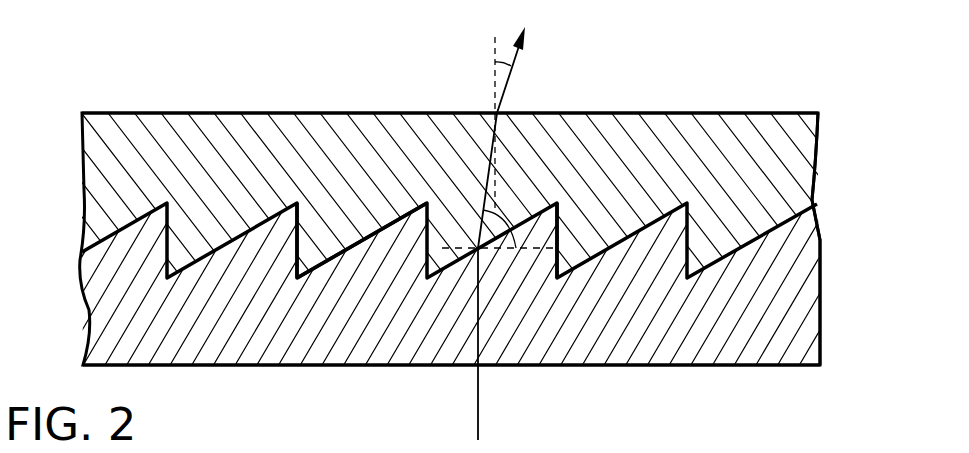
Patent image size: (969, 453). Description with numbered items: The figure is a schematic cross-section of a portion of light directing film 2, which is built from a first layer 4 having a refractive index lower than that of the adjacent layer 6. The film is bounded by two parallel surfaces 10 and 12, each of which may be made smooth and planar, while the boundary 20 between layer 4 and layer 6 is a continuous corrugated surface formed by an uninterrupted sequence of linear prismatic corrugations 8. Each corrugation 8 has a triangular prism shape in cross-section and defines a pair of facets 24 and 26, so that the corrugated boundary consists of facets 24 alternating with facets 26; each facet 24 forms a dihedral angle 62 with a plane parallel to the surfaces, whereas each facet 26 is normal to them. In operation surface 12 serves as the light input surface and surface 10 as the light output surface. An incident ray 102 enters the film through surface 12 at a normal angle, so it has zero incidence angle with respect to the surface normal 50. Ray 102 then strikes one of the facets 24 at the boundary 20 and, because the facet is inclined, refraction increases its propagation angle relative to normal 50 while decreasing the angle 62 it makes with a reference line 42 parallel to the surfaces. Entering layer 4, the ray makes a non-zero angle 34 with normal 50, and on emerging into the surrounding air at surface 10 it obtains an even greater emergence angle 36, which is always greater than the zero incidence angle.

The light directing film 2 is at (806, 68).
The first layer 4 is at (203, 128).
The layer 6 is at (160, 356).
The linear prismatic corrugations 8 is at (275, 206).
The surface 10 is at (300, 114).
The surface 12 is at (345, 367).
The boundary 20 is at (812, 209).
The facet 24 is at (364, 243).
The facet 26 is at (300, 234).
The angle 34 is at (497, 183).
The emergence angle 36 is at (505, 58).
The reference line 42 is at (462, 247).
The normal 50 is at (497, 98).
The dihedral angle 62 is at (527, 226).
The incident ray 102 is at (480, 403).